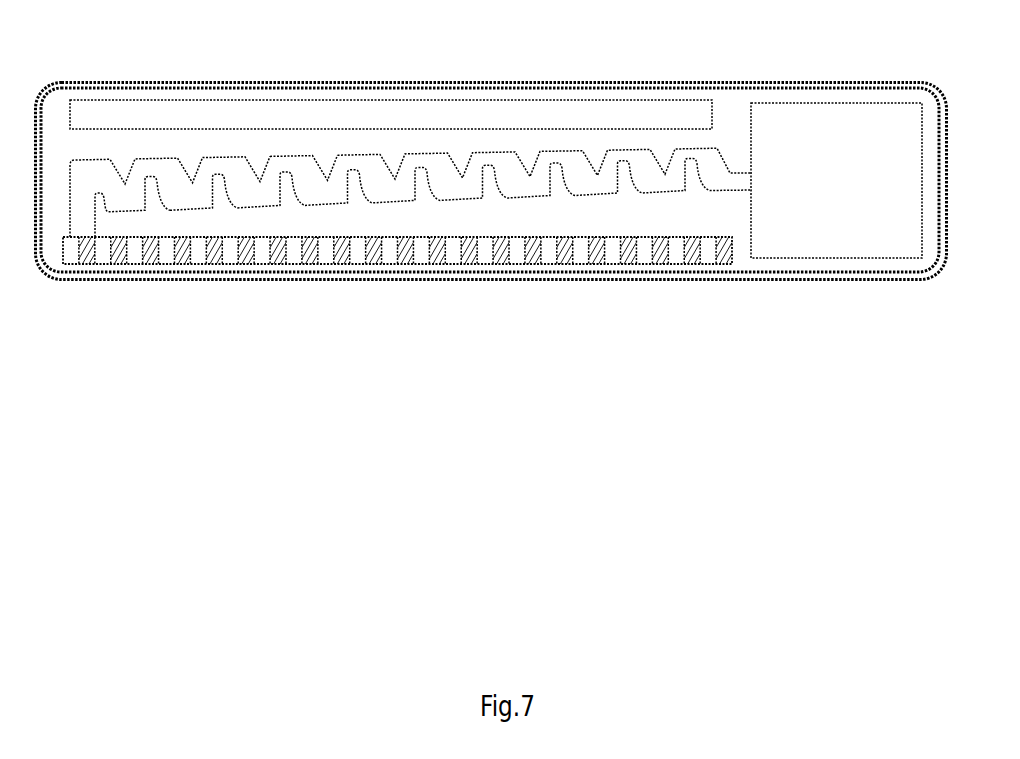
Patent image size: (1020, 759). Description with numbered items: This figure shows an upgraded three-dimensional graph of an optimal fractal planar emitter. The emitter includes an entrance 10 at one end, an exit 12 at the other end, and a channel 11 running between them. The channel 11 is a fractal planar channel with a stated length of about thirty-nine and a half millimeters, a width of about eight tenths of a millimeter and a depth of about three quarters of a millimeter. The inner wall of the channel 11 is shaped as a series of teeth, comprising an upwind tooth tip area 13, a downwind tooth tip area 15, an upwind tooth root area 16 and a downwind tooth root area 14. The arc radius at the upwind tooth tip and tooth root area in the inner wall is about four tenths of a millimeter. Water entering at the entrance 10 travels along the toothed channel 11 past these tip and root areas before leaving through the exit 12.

The entrance 10 is at (625, 263).
The channel 11 is at (605, 170).
The exit 12 is at (833, 145).
The upwind tooth tip area 13 is at (310, 162).
The downwind tooth root area 14 is at (278, 198).
The downwind tooth tip area 15 is at (268, 162).
The upwind tooth root area 16 is at (227, 198).